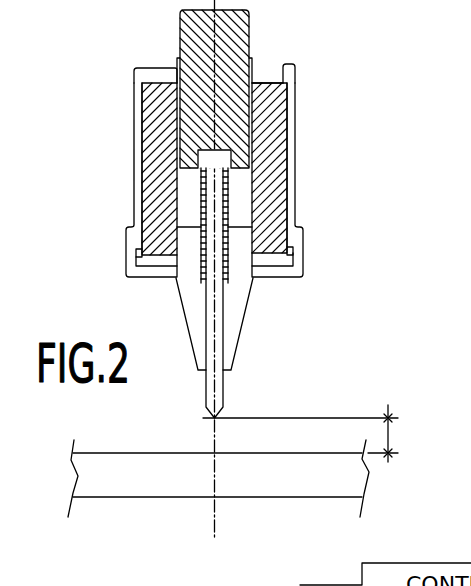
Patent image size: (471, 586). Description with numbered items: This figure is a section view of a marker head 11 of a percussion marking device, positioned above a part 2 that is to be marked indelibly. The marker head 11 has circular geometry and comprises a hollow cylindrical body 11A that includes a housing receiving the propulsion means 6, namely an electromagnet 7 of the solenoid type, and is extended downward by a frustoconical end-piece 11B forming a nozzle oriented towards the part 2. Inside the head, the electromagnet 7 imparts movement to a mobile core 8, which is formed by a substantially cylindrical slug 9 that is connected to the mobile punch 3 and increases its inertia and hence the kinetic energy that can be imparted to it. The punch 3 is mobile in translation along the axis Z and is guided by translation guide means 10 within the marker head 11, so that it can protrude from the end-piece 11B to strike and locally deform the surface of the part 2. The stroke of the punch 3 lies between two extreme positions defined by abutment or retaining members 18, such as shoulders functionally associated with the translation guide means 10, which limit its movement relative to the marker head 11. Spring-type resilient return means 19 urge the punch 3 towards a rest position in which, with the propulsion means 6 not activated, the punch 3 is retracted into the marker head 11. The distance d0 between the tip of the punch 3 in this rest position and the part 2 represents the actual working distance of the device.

The part to be marked 2 is at (147, 473).
The mobile punch 3 is at (223, 396).
The propulsion means 6 is at (295, 144).
The electromagnet 7 is at (272, 178).
The mobile core 8 is at (256, 42).
The cylindrical slug 9 is at (189, 51).
The translation guide means 10 is at (176, 106).
The marker head 11 is at (119, 200).
The hollow cylindrical body 11A is at (137, 152).
The frustoconical end-piece 11B is at (231, 348).
The abutment or retaining members 18 is at (237, 218).
The resilient return means 19 is at (198, 262).
The axis Z is at (214, 510).
The working distance d0 is at (309, 433).